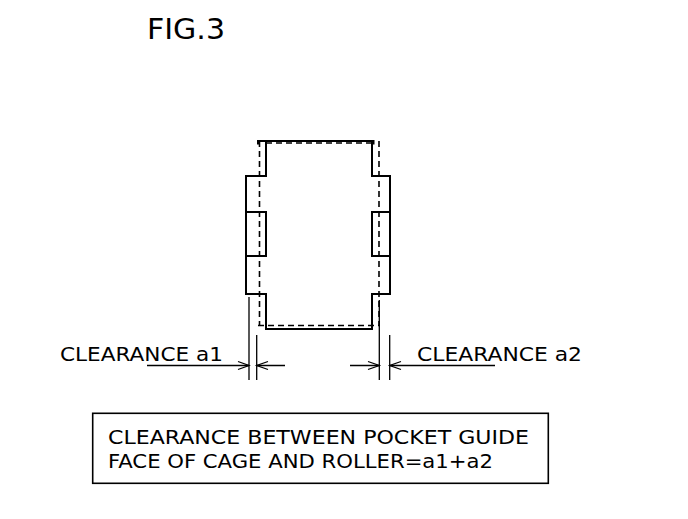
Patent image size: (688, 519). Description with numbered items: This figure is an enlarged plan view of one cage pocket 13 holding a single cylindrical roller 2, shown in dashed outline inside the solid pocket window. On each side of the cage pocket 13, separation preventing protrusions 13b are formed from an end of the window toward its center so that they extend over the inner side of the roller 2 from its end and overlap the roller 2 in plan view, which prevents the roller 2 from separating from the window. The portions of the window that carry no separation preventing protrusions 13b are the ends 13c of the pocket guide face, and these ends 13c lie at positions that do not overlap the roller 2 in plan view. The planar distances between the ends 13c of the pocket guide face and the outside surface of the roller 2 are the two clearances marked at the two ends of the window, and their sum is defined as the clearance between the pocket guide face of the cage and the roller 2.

The roller 2 is at (258, 161).
The cage pocket 13 is at (318, 130).
The separation preventing protrusion 13b is at (259, 309).
The end of pocket guide face 13c is at (246, 194).